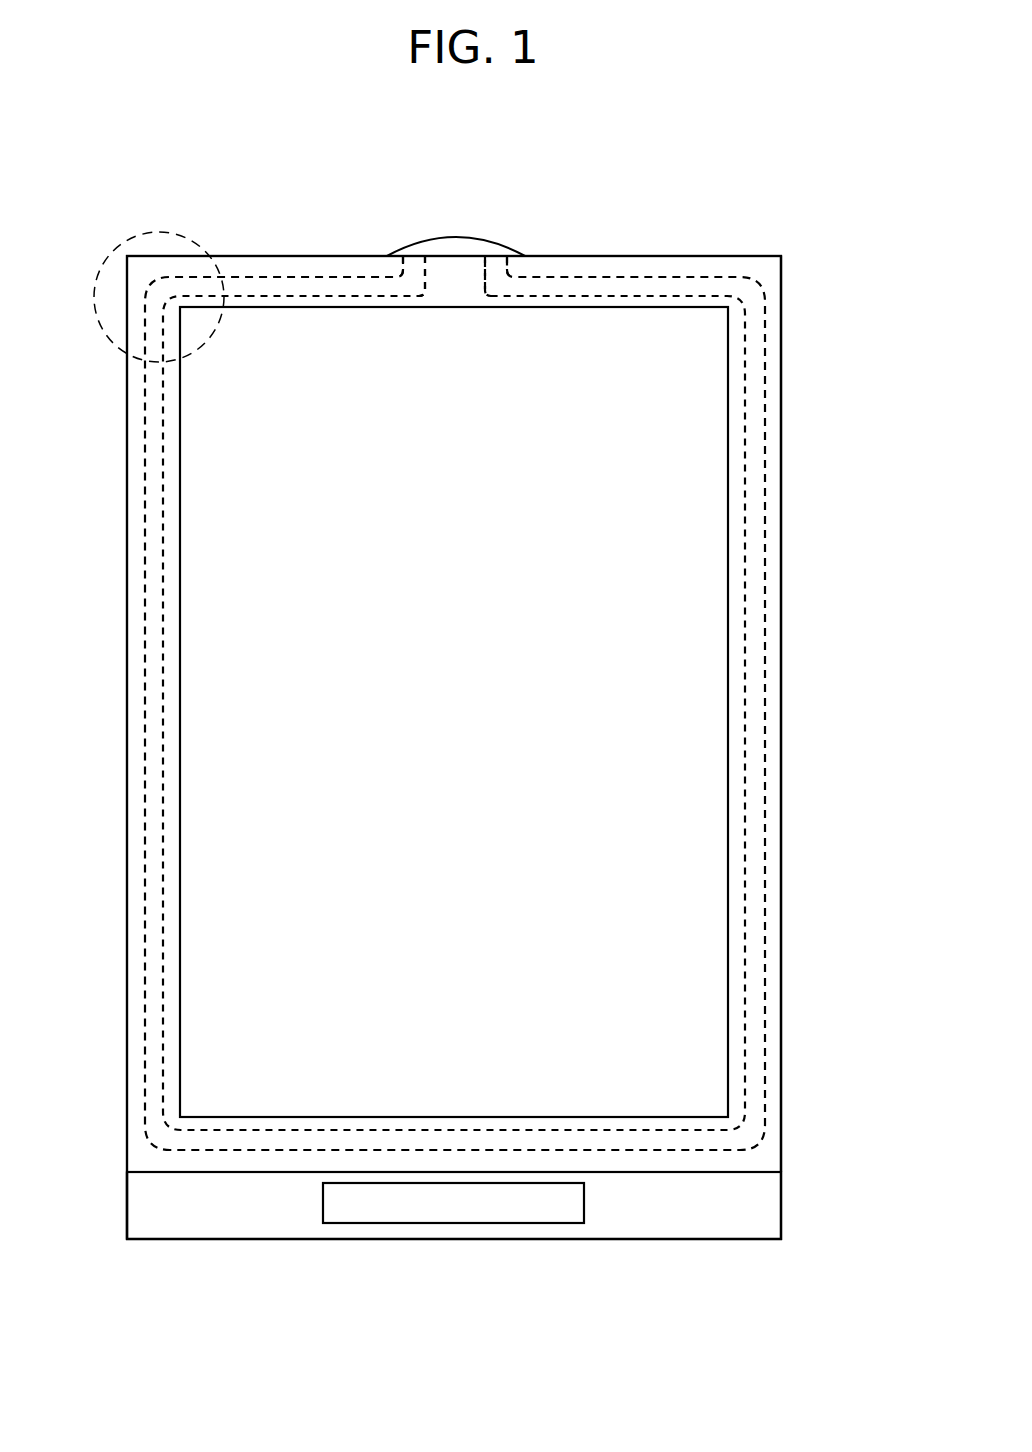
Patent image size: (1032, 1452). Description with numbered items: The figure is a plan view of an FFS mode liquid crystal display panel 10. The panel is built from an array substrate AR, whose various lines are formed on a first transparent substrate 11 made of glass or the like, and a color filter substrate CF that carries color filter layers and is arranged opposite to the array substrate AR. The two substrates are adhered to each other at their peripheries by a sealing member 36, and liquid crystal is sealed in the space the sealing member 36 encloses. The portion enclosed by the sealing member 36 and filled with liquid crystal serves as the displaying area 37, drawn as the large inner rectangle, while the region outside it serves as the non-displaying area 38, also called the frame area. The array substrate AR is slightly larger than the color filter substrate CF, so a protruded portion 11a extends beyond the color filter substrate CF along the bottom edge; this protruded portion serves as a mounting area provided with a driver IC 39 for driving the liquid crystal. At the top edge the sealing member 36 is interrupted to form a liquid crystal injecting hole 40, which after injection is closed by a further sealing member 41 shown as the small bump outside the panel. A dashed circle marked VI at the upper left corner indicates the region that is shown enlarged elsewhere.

The liquid crystal display panel 10 is at (491, 121).
The first transparent substrate 11 is at (781, 1203).
The lower portion of housing 11a is at (750, 1230).
The sealing member 36 is at (738, 427).
The displaying area 37 is at (642, 668).
The non-displaying area 38 is at (767, 1012).
The driver IC 39 is at (435, 1207).
The liquid crystal injecting hole 40 is at (434, 298).
The sealing member 41 is at (475, 247).
The color filter substrate CF is at (804, 863).
The array substrate AR is at (103, 1254).
The section view indicator VI is at (108, 240).